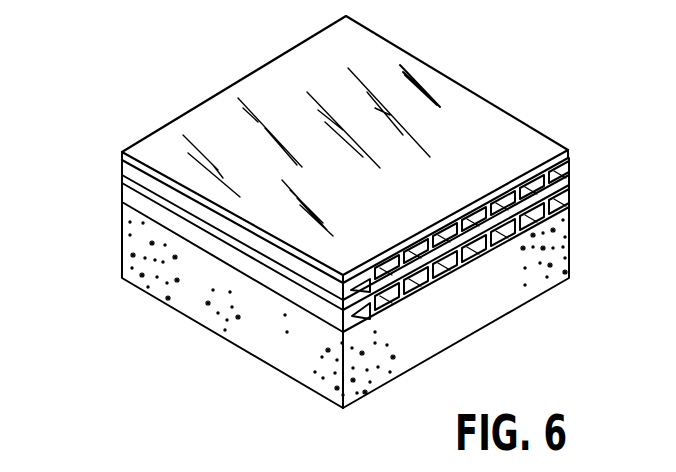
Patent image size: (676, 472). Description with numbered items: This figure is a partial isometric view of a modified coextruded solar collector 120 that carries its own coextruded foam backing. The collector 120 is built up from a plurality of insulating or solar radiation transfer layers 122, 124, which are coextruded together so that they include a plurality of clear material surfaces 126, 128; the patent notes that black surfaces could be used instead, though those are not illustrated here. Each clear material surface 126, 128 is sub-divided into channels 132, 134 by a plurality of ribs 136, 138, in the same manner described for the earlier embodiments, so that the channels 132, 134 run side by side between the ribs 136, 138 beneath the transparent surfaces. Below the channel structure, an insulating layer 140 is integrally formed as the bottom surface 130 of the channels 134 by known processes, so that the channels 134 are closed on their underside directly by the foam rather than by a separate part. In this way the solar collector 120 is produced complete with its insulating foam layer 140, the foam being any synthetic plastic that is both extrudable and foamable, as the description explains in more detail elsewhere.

The coextruded solar collector 120 is at (346, 305).
The insulating or solar radiation transfer layer 122 is at (152, 183).
The insulating or solar radiation transfer layer 124 is at (173, 222).
The clear material surface 126 is at (568, 150).
The clear material surface 128 is at (568, 178).
The bottom surface 130 is at (568, 205).
The channel 132 is at (390, 266).
The channel 134 is at (416, 291).
The rib 136 is at (455, 224).
The rib 138 is at (509, 243).
The insulating layer 140 is at (548, 282).